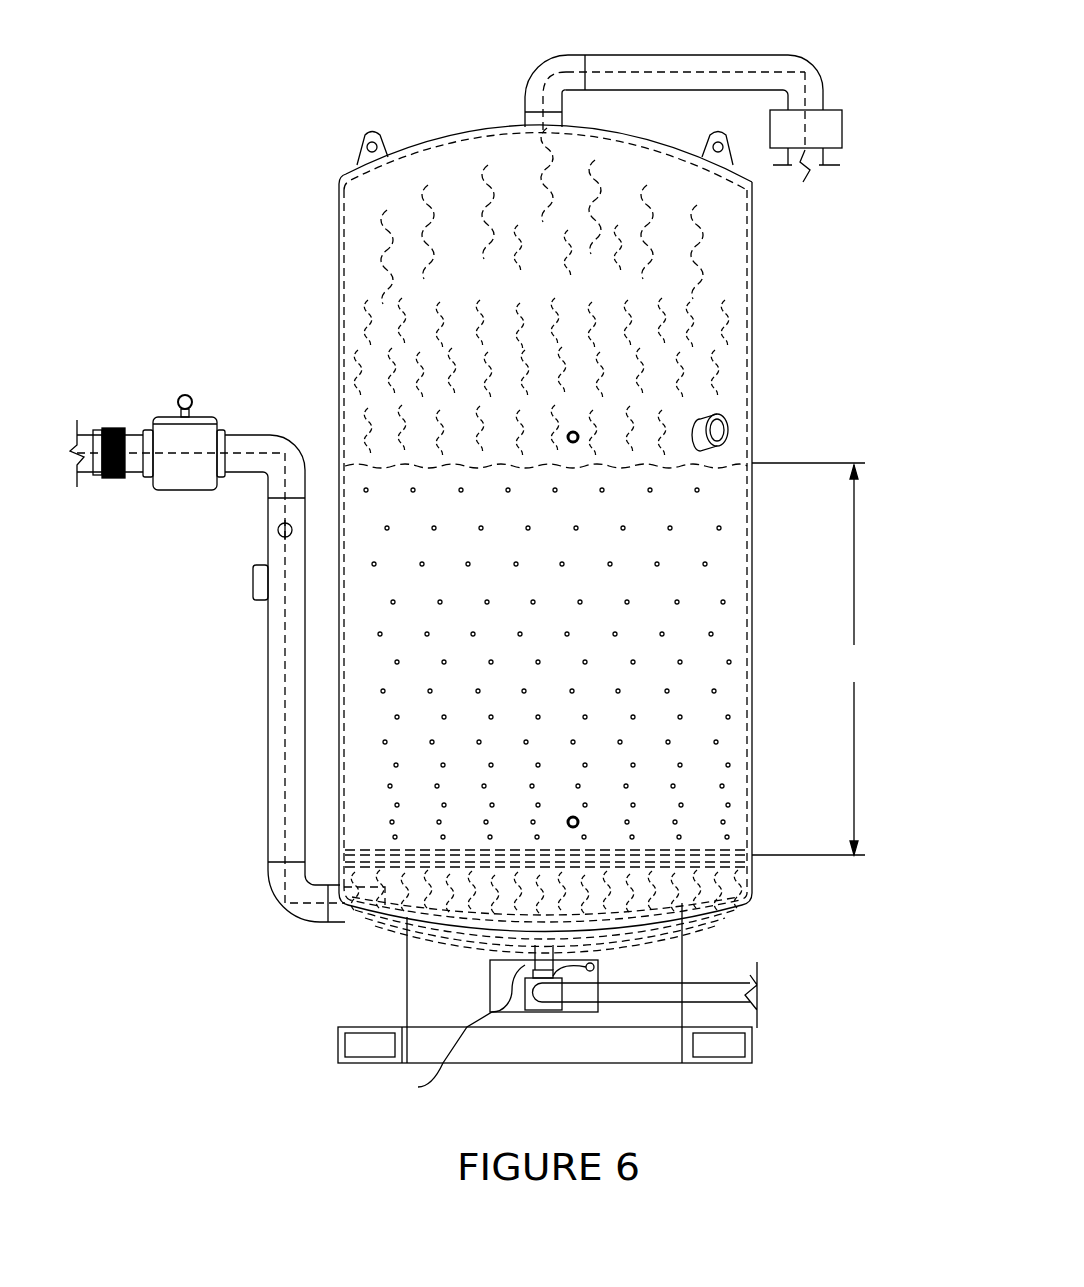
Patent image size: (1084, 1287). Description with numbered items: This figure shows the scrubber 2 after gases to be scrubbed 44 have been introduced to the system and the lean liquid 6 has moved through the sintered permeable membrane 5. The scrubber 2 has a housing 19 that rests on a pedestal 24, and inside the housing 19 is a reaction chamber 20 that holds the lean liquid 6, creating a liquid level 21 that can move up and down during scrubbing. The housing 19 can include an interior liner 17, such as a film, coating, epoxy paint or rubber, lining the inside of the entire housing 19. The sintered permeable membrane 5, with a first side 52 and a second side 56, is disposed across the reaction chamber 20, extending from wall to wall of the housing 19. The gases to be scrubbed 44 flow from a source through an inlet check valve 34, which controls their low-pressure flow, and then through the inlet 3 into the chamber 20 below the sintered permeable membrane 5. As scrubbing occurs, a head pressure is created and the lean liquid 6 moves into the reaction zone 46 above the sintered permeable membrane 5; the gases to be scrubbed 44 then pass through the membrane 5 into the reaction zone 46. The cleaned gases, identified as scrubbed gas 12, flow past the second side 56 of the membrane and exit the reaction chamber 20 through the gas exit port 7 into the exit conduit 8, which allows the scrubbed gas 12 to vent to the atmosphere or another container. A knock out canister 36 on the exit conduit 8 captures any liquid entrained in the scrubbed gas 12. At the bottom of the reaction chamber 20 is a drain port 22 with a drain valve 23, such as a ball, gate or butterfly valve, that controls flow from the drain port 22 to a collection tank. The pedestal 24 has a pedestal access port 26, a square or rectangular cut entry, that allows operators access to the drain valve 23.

The scrubber 2 is at (297, 103).
The inlet 3 is at (350, 910).
The sintered permeable membrane 5 is at (740, 862).
The lean liquid 6 is at (722, 577).
The gas exit port 7 is at (535, 115).
The exit conduit 8 is at (695, 55).
The scrubbed gas 12 is at (672, 70).
The interior liner 17 is at (468, 130).
The housing 19 is at (338, 290).
The reaction chamber 20 is at (355, 232).
The liquid level 21 is at (365, 462).
The drain port 22 is at (454, 1035).
The drain valve 23 is at (540, 1010).
The pedestal 24 is at (407, 980).
The pedestal access port 26 is at (558, 1010).
The inlet check valve 34 is at (183, 432).
The knock out canister 36 is at (828, 128).
The gases to be scrubbed 44 is at (285, 677).
The reaction zone 46 is at (813, 659).
The first side 52 is at (735, 868).
The second side 56 is at (735, 852).